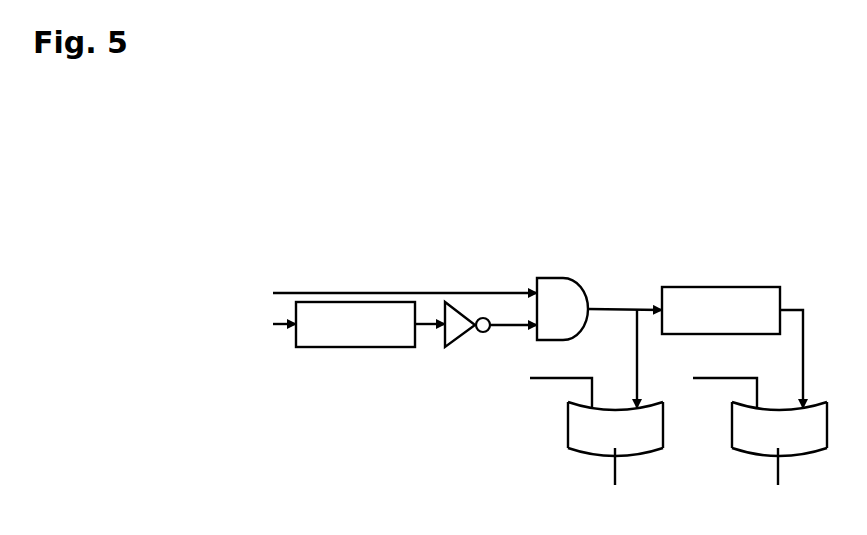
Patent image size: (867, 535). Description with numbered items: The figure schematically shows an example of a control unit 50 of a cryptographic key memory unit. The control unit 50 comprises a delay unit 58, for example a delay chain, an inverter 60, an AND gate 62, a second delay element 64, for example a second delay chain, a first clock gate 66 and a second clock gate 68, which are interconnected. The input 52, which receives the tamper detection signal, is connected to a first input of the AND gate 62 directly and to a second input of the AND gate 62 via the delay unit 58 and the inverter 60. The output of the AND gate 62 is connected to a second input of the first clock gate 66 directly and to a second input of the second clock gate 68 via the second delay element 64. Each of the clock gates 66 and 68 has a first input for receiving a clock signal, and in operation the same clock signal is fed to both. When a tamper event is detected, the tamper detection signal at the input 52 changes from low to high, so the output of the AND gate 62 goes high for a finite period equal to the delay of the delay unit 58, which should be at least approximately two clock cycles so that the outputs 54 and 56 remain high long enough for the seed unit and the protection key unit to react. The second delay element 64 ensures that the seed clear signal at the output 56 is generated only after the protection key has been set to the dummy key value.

The control unit 50 is at (257, 479).
The input 52 is at (286, 267).
The output 54 is at (613, 473).
The output 56 is at (777, 468).
The delay unit 58 is at (330, 349).
The inverter 60 is at (462, 339).
The AND gate 62 is at (552, 277).
The second delay element 64 is at (698, 287).
The first clock gate 66 is at (568, 425).
The second clock gate 68 is at (732, 425).